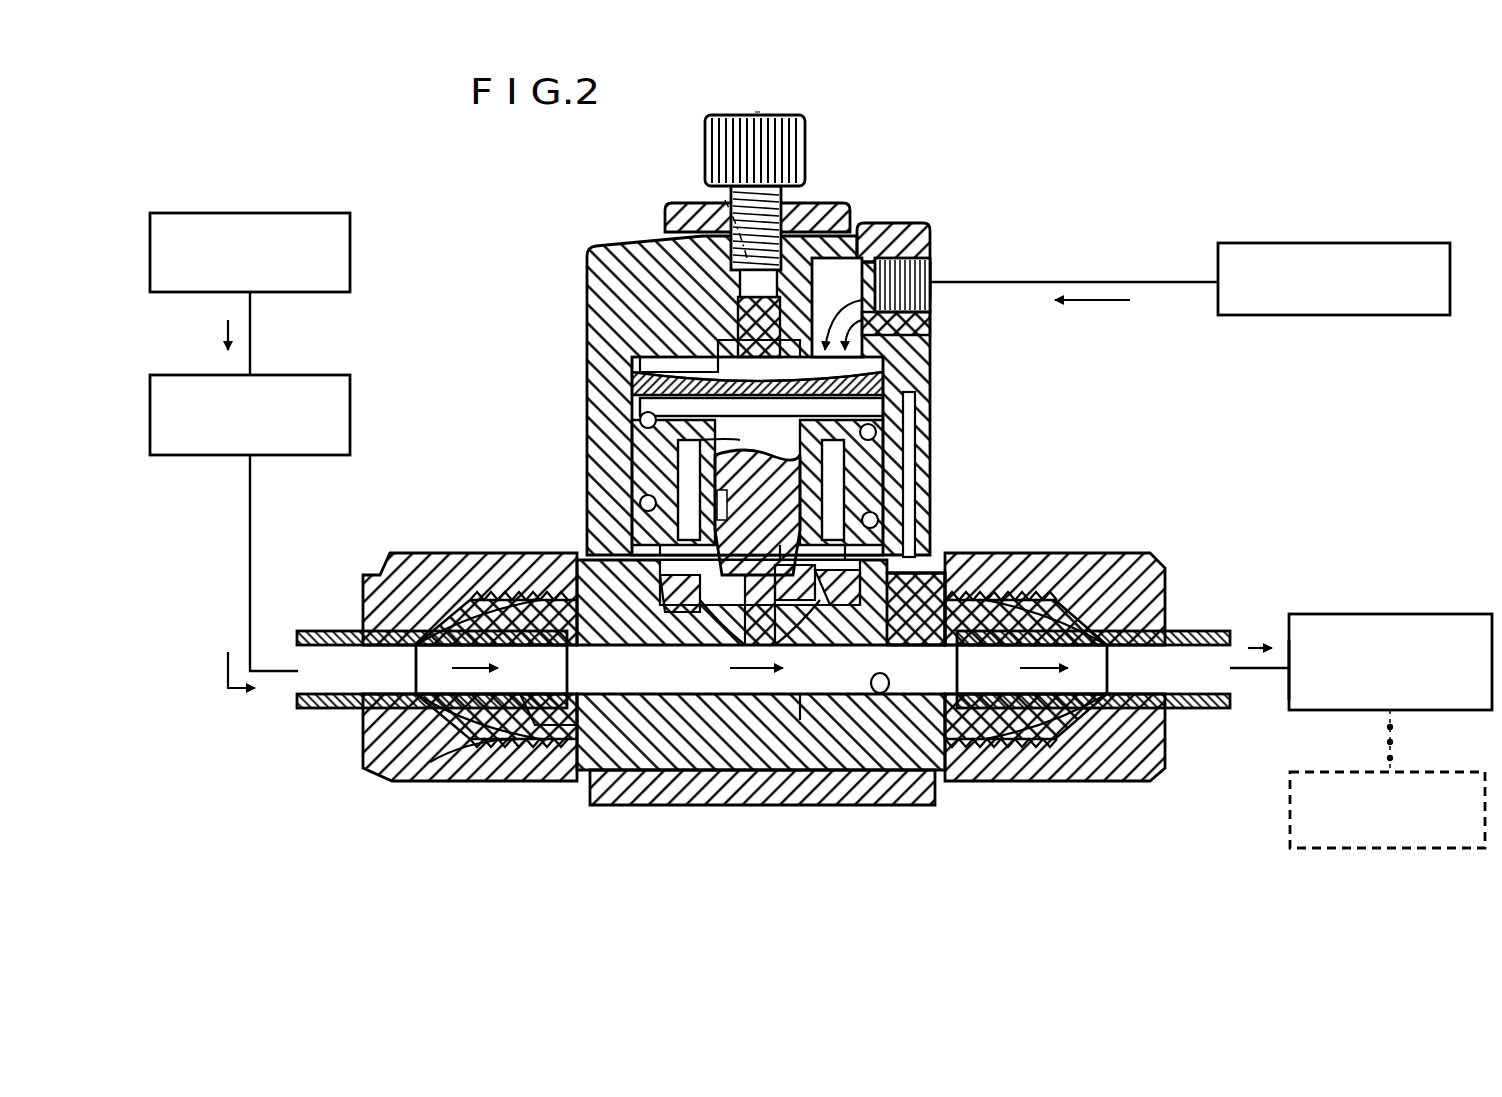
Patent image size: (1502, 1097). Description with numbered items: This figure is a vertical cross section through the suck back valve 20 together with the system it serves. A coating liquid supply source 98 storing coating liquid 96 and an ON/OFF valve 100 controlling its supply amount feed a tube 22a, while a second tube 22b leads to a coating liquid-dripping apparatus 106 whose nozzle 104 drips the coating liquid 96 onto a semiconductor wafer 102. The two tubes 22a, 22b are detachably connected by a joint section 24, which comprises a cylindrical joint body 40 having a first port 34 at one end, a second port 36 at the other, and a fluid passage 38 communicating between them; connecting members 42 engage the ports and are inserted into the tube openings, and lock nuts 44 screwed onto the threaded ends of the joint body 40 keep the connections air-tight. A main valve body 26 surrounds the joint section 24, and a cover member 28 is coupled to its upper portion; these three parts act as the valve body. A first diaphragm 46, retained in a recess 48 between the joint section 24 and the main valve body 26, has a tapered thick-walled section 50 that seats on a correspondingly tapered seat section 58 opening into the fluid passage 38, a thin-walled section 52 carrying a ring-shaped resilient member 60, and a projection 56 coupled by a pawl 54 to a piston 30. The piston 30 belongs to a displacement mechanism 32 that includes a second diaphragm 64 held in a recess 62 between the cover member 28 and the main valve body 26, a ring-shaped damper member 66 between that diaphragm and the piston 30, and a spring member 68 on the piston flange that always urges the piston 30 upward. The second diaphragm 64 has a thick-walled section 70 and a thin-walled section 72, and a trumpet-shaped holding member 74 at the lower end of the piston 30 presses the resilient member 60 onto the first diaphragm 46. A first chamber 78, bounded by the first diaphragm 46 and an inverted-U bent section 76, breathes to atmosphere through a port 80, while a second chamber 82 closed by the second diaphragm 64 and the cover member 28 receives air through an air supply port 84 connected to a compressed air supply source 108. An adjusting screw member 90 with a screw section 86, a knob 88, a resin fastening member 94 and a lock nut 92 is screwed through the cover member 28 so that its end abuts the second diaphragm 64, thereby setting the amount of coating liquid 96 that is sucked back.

The suck back valve 20 is at (1015, 205).
The tube 22a is at (330, 710).
The tube 22b is at (1150, 740).
The joint section 24 is at (768, 750).
The main valve body 26 is at (925, 462).
The cover member 28 is at (890, 222).
The piston 30 is at (740, 445).
The displacement mechanism 32 is at (890, 480).
The first port 34 is at (452, 783).
The second port 36 is at (1050, 785).
The fluid passage 38 is at (880, 693).
The joint body 40 is at (640, 715).
The connecting member 42 is at (520, 595).
The lock nut 44 is at (420, 565).
The first diaphragm 46 is at (680, 610).
The recess 48 is at (910, 580).
The thick-walled section 50 is at (735, 640).
The thin-walled section 52 is at (560, 725).
The pawl 54 is at (830, 560).
The projection 56 is at (665, 535).
The seat section 58 is at (805, 725).
The resilient member 60 is at (528, 760).
The recess 62 is at (665, 372).
The second diaphragm 64 is at (640, 265).
The damper member 66 is at (905, 388).
The spring member 68 is at (878, 436).
The thick-walled section 70 is at (865, 406).
The thin-walled section 72 is at (690, 368).
The holding member 74 is at (850, 515).
The bent section 76 is at (705, 440).
The first chamber 78 is at (690, 495).
The port 80 is at (640, 550).
The second chamber 82 is at (865, 275).
The air supply port 84 is at (905, 282).
The screw section 86 is at (783, 212).
The knob 88 is at (792, 150).
The adjusting screw member 90 is at (762, 112).
The lock nut 92 is at (670, 218).
The fastening member 94 is at (725, 200).
The coating liquid 96 is at (1395, 742).
The coating liquid supply source 98 is at (255, 213).
The ON/OFF valve 100 is at (278, 375).
The semiconductor wafer 102 is at (1290, 807).
The nozzle 104 is at (1384, 710).
The coating liquid-dripping apparatus 106 is at (1289, 704).
The compressed air supply source 108 is at (1295, 243).